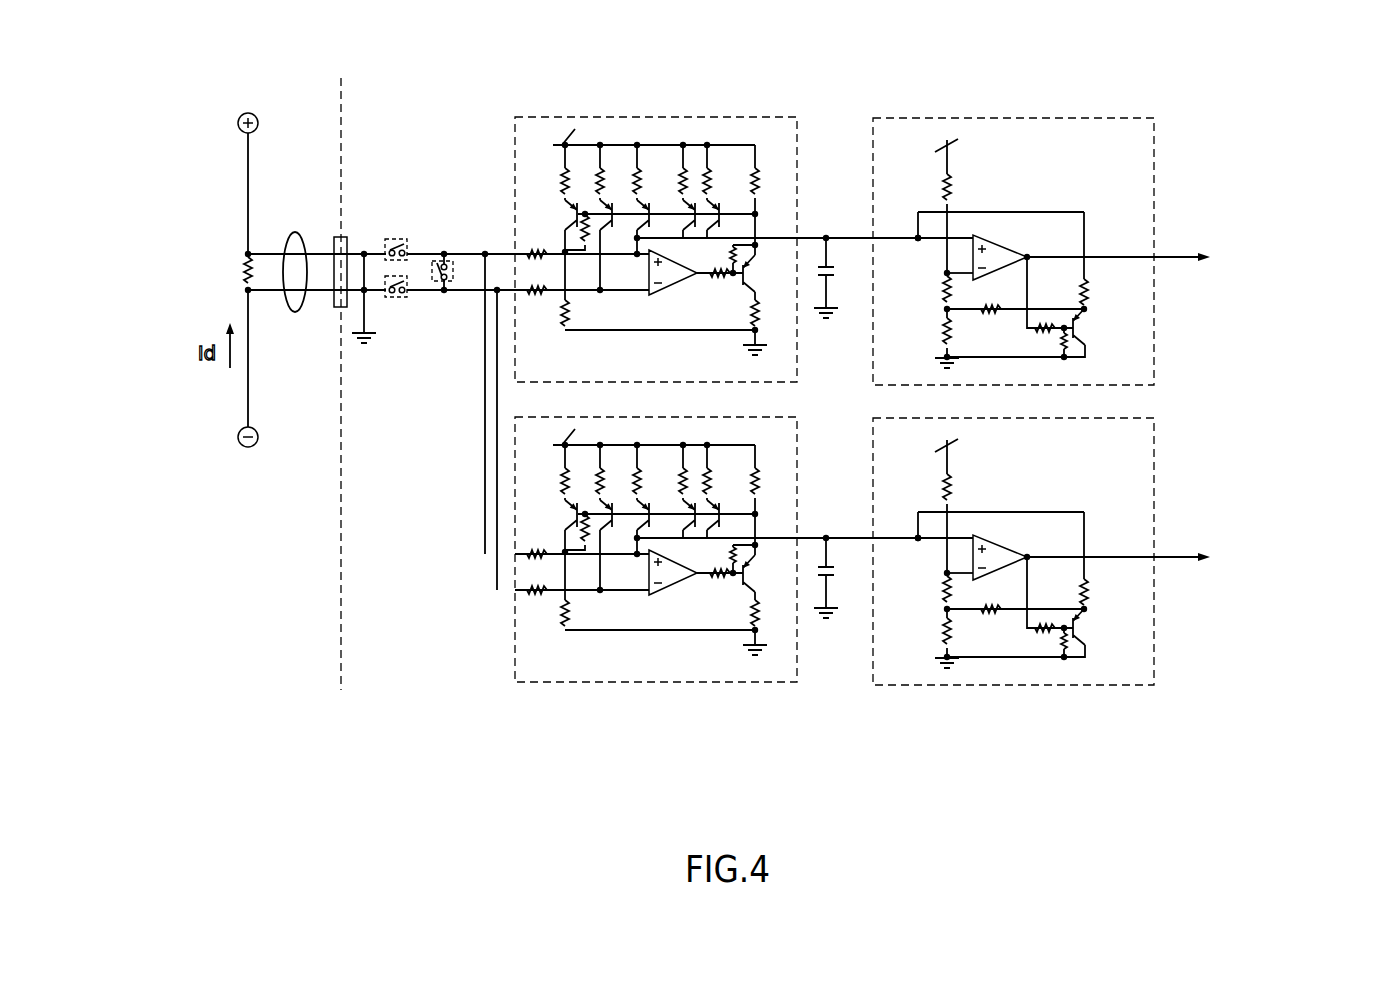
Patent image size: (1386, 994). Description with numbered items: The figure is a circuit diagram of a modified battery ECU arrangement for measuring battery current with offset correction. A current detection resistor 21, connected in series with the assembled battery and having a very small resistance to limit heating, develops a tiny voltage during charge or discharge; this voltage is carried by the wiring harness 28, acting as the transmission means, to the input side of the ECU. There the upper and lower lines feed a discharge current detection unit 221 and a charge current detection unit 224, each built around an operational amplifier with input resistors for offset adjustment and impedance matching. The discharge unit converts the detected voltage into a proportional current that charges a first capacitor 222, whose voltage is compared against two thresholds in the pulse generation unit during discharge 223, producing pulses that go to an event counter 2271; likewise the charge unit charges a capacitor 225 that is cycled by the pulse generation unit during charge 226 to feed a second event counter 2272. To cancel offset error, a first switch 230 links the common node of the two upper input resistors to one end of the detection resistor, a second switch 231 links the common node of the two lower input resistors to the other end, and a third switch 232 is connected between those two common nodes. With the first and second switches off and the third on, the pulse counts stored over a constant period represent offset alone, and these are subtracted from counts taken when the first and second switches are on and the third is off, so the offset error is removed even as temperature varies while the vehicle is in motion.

The current detection resistor 21 is at (242, 283).
The wiring harness 28 is at (295, 233).
The discharge current detection unit 221 is at (717, 115).
The first capacitor 222 is at (853, 300).
The pulse generation unit during discharge 223 is at (1083, 117).
The charge current detection unit 224 is at (715, 685).
The capacitor 225 is at (853, 600).
The pulse generation unit during charge 226 is at (1075, 687).
The first switch 230 is at (413, 233).
The second switch 231 is at (410, 305).
The third switch 232 is at (455, 250).
The event counter 2271 is at (1191, 256).
The event counter 2272 is at (1191, 556).